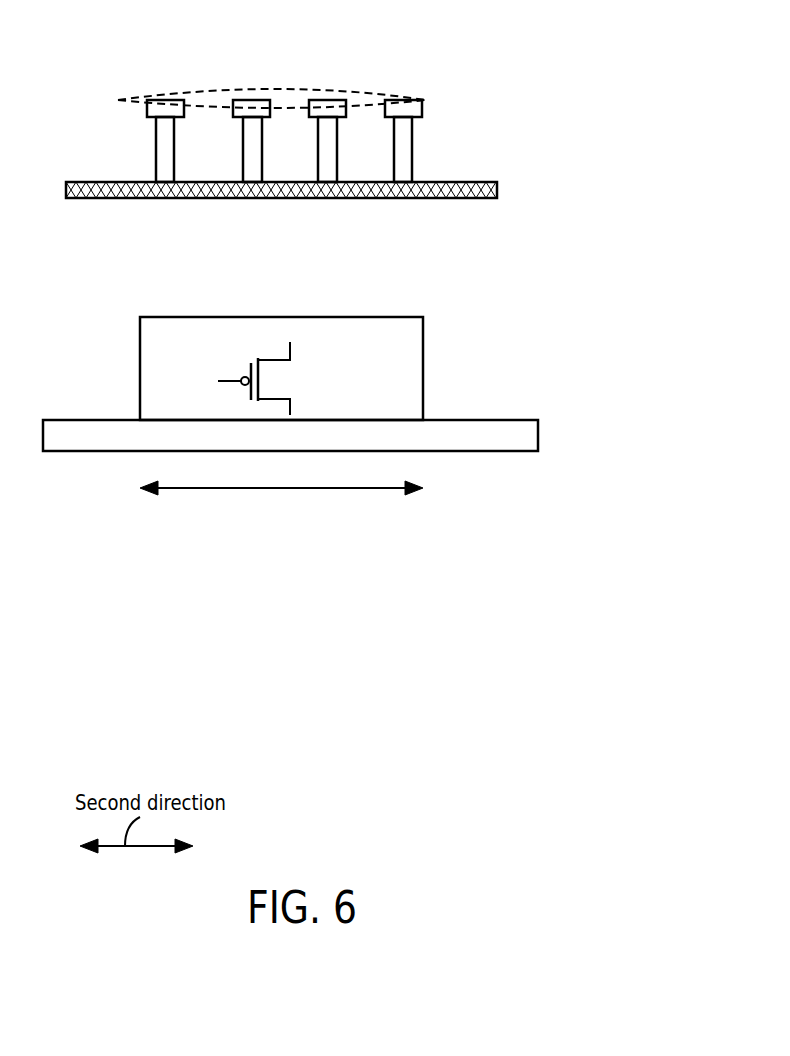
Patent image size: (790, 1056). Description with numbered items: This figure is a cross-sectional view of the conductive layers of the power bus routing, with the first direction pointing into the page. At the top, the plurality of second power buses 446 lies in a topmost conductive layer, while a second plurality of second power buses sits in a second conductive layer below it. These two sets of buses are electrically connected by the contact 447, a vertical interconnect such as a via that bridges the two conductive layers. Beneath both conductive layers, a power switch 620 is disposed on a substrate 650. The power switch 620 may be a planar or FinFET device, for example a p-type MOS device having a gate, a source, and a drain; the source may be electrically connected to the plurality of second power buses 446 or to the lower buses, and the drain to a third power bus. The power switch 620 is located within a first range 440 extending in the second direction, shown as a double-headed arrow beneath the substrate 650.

The plurality of second power buses 446 is at (428, 100).
The contact 447 is at (156, 152).
The power switch 620 is at (308, 368).
The substrate 650 is at (495, 450).
The first range 440 is at (355, 487).